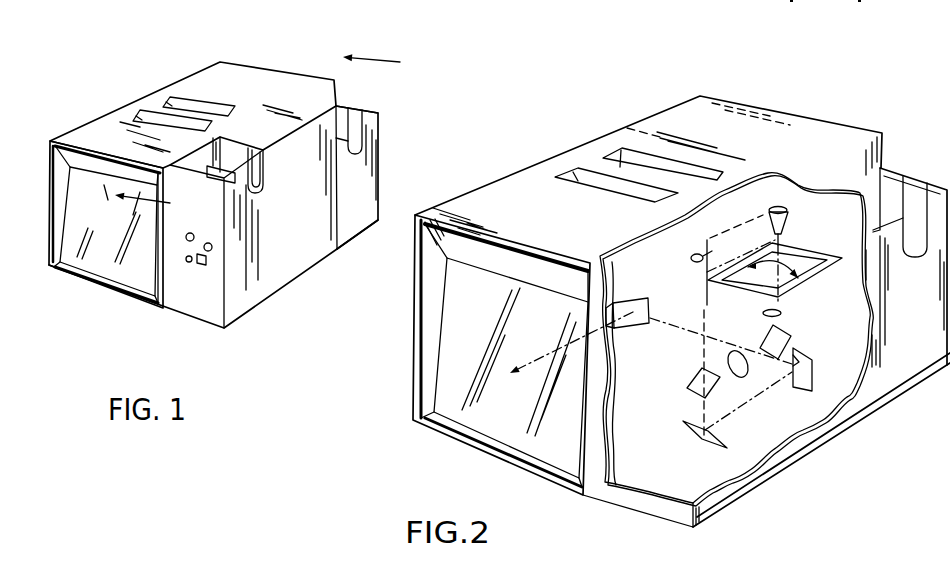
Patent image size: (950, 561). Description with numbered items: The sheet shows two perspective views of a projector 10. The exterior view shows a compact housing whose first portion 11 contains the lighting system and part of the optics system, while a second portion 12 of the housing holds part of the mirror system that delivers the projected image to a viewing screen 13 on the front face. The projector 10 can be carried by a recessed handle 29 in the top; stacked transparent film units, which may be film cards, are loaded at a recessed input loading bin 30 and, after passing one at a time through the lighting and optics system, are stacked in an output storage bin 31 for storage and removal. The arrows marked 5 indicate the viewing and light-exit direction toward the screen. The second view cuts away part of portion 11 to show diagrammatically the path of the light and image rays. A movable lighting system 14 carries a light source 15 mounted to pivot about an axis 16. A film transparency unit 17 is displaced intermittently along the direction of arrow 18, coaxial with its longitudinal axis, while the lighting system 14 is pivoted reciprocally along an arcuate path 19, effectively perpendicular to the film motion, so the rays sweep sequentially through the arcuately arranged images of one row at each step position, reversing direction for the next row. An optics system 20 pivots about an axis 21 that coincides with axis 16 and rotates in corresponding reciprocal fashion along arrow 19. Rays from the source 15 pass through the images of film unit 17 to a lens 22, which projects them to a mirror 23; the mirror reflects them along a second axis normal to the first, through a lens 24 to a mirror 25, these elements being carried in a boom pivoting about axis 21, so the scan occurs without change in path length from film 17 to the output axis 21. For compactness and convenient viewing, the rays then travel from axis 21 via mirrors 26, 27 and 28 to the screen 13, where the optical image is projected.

In FIG. 1, the viewing direction arrow 5 is at (264, 133).
In FIG. 1, the projector 10 is at (270, 325).
In FIG. 1, the first portion 11 is at (383, 88).
In FIG. 2, the first portion 11 is at (918, 368).
In FIG. 1, the second portion 12 is at (84, 106).
In FIG. 2, the second portion 12 is at (495, 193).
In FIG. 1, the viewing screen 13 is at (93, 267).
In FIG. 2, the viewing screen 13 is at (452, 357).
In FIG. 2, the movable lighting system 14 is at (681, 250).
In FIG. 2, the light source 15 is at (788, 216).
In FIG. 2, the axis 16 is at (705, 278).
In FIG. 2, the film transparency unit 17 is at (837, 268).
In FIG. 2, the arrow 18 is at (815, 243).
In FIG. 2, the arcuate path 19 is at (802, 285).
In FIG. 2, the optics system 20 is at (806, 344).
In FIG. 2, the axis 21 is at (702, 407).
In FIG. 2, the lens 22 is at (763, 315).
In FIG. 2, the mirror 23 is at (790, 338).
In FIG. 2, the lens 24 is at (722, 355).
In FIG. 2, the mirror 25 is at (695, 377).
In FIG. 2, the mirror 26 is at (683, 440).
In FIG. 2, the mirror 27 is at (797, 380).
In FIG. 2, the mirror 28 is at (636, 301).
In FIG. 1, the recessed handle 29 is at (165, 104).
In FIG. 2, the recessed handle 29 is at (597, 165).
In FIG. 1, the recessed input loading bin 30 is at (263, 162).
In FIG. 1, the output storage bin 31 is at (373, 105).
In FIG. 2, the output storage bin 31 is at (908, 188).